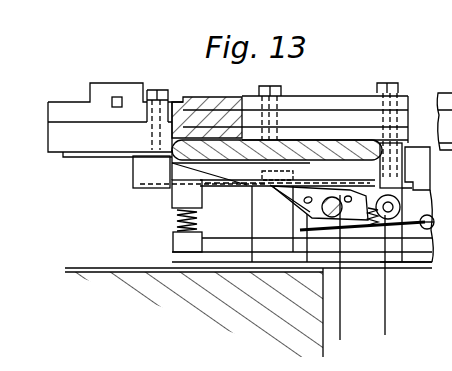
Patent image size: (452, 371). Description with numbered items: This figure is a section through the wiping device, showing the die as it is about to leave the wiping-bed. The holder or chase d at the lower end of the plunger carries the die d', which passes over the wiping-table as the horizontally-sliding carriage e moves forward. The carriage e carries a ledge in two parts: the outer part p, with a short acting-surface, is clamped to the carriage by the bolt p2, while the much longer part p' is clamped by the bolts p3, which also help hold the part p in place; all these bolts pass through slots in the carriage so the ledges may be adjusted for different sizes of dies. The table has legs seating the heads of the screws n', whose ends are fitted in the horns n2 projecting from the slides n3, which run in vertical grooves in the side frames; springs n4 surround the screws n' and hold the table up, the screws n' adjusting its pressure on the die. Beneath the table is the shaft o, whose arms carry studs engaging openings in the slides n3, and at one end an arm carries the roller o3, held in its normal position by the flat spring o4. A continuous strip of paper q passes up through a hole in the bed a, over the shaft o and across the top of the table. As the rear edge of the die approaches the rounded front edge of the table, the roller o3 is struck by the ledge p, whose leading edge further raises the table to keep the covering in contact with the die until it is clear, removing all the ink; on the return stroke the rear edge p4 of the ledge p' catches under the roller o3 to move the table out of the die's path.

The holder or chase d is at (115, 117).
The die d' is at (116, 166).
The bolts p3 is at (282, 80).
The horizontally-sliding carriage e is at (207, 108).
The bolt p2 is at (388, 84).
The hatched slide bar h is at (277, 160).
The ledge part p' is at (188, 172).
The outer ledge part p is at (391, 165).
The rear edge of the ledge p4 is at (417, 168).
The screws n' is at (196, 188).
The springs n4 is at (180, 220).
The horns n2 is at (176, 242).
The slides n3 is at (270, 224).
The shaft o is at (318, 192).
The roller o3 is at (419, 210).
The flat spring o4 is at (362, 236).
The strip of paper q is at (372, 271).
The bed a is at (195, 315).